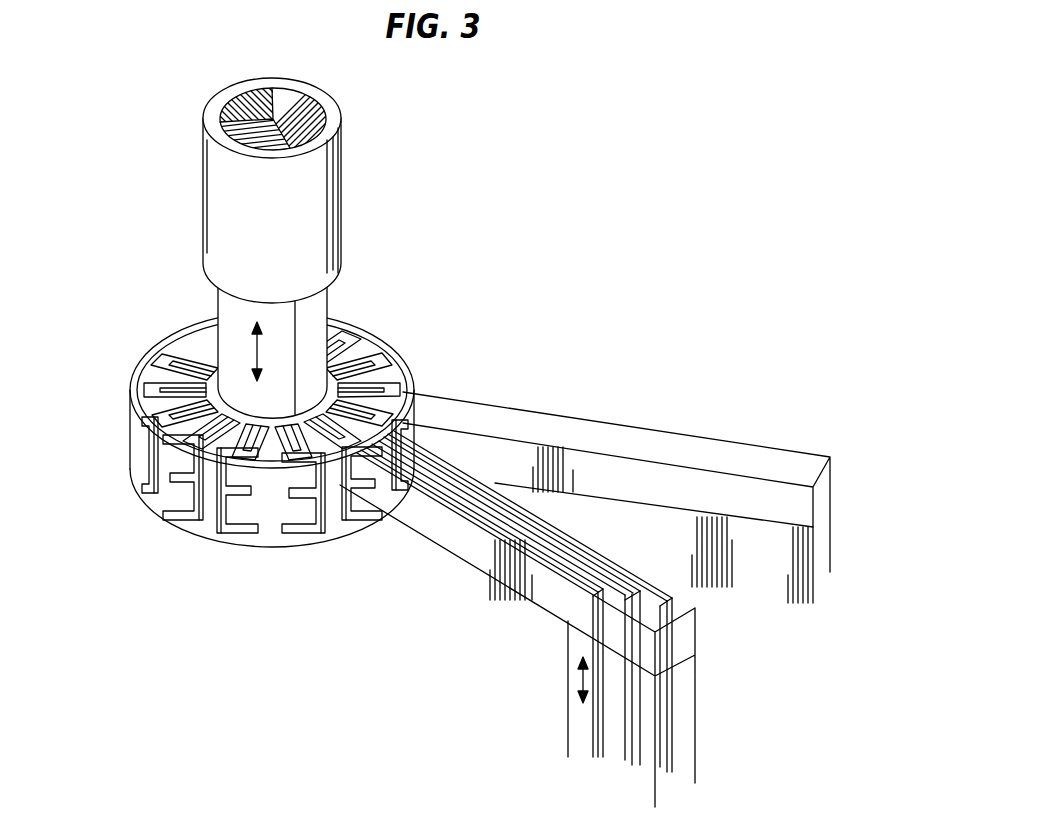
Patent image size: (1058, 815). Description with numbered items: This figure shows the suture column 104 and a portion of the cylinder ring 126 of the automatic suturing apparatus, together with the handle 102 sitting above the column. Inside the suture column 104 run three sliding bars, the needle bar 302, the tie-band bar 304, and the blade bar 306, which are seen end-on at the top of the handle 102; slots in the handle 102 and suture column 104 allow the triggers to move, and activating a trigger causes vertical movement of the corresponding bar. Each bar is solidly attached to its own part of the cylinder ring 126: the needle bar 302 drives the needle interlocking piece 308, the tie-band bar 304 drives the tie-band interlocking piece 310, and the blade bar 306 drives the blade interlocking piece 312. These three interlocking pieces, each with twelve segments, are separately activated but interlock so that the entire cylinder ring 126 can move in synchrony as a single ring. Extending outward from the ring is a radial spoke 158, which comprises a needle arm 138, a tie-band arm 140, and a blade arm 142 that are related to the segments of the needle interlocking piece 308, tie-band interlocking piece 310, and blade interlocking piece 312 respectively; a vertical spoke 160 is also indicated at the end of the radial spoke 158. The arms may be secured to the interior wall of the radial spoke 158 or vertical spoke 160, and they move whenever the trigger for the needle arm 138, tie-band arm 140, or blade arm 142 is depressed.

The handle 102 is at (282, 173).
The suture column 104 is at (227, 300).
The cylinder ring 126 is at (279, 422).
The needle arm 138 is at (673, 700).
The tie-band arm 140 is at (633, 730).
The blade arm 142 is at (590, 723).
The radial spoke 158 is at (613, 435).
The vertical spoke 160 is at (752, 560).
The needle bar 302 is at (237, 122).
The tie-band bar 304 is at (317, 100).
The blade bar 306 is at (263, 95).
The needle interlocking piece 308 is at (210, 378).
The tie-band interlocking piece 310 is at (168, 413).
The blade interlocking piece 312 is at (197, 388).